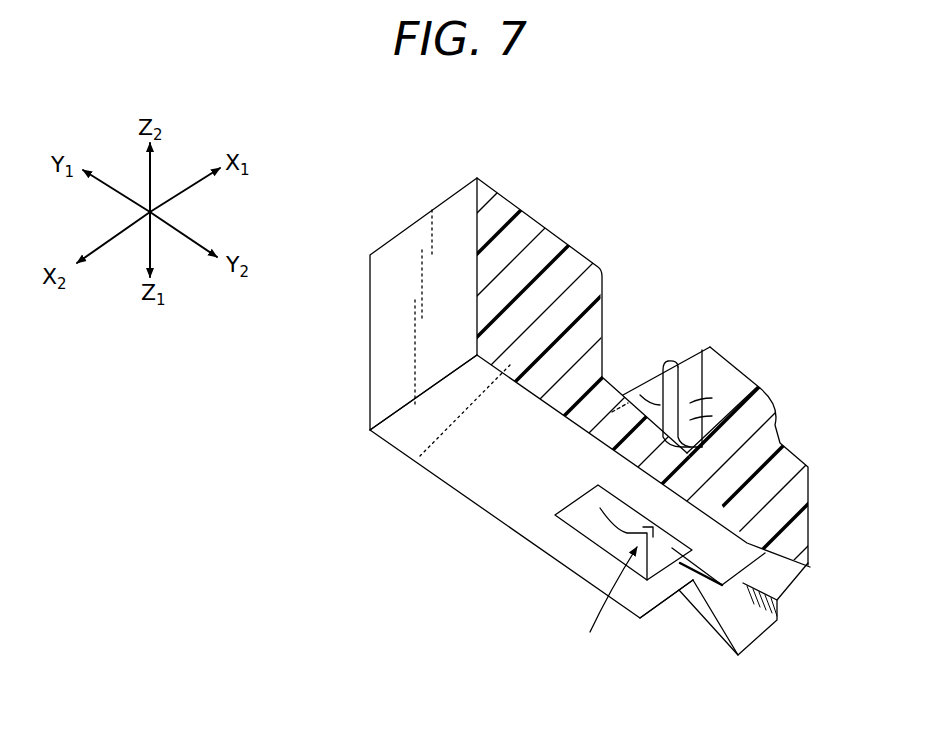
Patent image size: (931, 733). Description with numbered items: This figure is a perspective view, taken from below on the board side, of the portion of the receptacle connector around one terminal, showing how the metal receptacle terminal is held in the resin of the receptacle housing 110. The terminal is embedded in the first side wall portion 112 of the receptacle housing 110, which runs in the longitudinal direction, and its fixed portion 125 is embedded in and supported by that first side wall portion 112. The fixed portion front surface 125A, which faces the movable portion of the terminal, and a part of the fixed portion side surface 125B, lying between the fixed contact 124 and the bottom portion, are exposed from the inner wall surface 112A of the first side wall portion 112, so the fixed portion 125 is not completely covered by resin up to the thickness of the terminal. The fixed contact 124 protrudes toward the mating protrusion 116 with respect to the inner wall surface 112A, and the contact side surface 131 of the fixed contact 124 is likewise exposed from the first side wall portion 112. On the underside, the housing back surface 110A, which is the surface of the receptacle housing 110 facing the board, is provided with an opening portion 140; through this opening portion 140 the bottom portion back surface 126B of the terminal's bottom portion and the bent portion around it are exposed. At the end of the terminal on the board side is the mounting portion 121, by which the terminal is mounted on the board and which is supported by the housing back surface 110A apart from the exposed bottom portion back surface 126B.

The receptacle housing 110 is at (442, 186).
The mating protrusion 116 is at (536, 212).
The first side wall portion 112 is at (738, 355).
The inner wall surface 112A is at (707, 374).
The contact side surface 131 is at (670, 370).
The fixed portion 125 is at (646, 410).
The fixed contact 124 is at (647, 393).
The fixed portion front surface 125A is at (680, 403).
The fixed portion side surface 125B is at (678, 420).
The housing back surface 110A is at (520, 470).
The bottom portion back surface 126B is at (602, 507).
The opening portion 140 is at (599, 605).
The mounting portion 121 is at (745, 635).